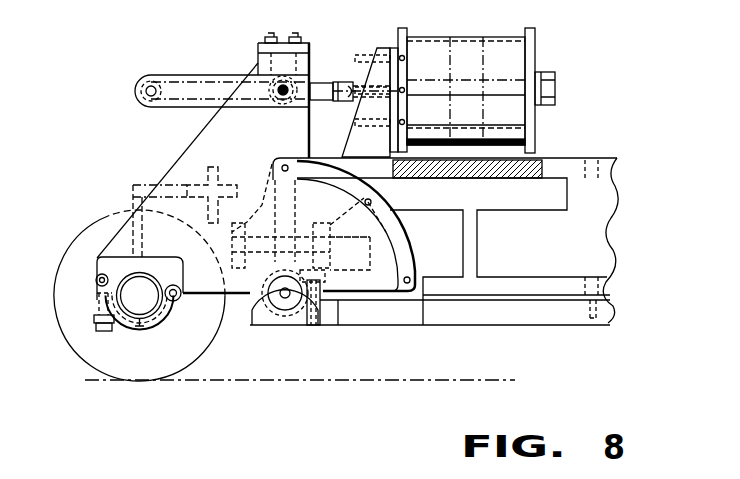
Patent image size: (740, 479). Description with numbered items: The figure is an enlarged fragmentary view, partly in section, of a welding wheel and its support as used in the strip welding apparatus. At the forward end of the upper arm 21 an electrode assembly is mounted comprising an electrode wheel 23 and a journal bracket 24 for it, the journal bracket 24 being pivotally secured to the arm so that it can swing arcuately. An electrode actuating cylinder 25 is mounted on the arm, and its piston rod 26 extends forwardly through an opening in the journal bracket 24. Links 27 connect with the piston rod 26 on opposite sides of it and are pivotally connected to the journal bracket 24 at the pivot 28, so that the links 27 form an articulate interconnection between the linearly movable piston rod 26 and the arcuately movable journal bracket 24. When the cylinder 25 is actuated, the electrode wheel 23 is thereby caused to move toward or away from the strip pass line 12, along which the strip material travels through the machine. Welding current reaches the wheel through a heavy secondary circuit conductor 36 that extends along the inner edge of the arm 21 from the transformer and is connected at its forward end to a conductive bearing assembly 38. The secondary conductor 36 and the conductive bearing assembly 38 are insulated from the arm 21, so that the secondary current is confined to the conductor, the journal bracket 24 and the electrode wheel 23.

The strip pass line 12 is at (293, 380).
The upper arm 21 is at (502, 265).
The electrode wheel 23 is at (102, 232).
The journal bracket 24 is at (198, 148).
The electrode actuating cylinder 25 is at (433, 57).
The piston rod 26 is at (324, 84).
The link 27 is at (170, 82).
The pivotal connection 28 is at (276, 89).
The secondary circuit conductor 36 is at (370, 315).
The conductive bearing assembly 38 is at (265, 312).